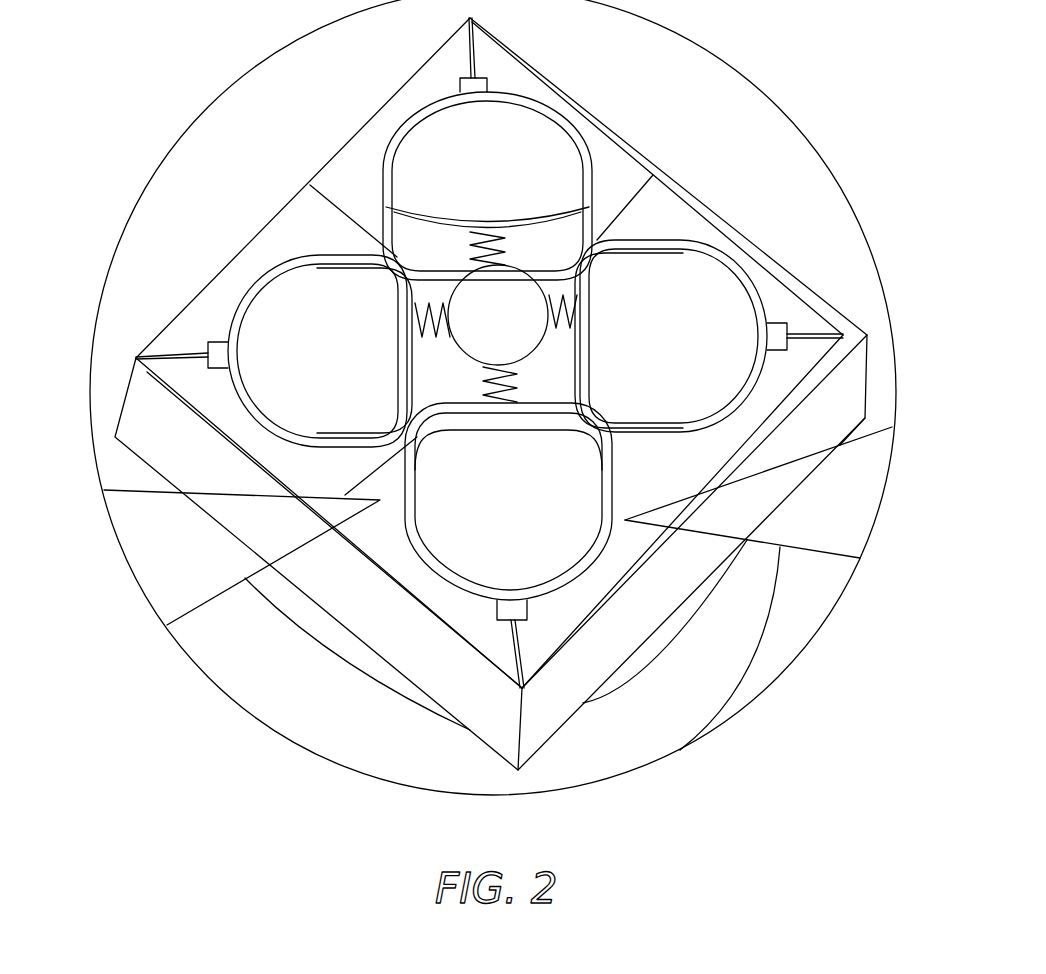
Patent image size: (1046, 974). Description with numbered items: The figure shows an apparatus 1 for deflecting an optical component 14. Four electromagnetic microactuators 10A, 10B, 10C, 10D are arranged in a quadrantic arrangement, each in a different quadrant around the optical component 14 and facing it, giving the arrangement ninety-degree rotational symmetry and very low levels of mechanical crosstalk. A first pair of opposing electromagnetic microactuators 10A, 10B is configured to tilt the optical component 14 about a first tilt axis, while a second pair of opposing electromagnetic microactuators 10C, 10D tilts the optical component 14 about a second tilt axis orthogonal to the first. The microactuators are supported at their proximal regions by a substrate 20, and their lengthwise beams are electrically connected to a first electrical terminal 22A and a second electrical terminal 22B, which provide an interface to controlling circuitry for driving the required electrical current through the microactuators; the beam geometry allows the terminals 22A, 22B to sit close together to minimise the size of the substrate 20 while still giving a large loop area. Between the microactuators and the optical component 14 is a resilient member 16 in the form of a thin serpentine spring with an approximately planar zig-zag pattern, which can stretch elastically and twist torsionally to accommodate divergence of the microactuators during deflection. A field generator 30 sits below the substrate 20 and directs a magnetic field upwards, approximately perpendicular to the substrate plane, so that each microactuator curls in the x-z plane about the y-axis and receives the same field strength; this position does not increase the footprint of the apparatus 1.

The apparatus 1 is at (80, 156).
The electromagnetic microactuator 10A is at (727, 257).
The electromagnetic microactuator 10B is at (270, 277).
The electromagnetic microactuator 10C is at (413, 117).
The electromagnetic microactuator 10D is at (423, 547).
The optical component 14 is at (513, 328).
The resilient member 16 is at (517, 370).
The substrate 20 is at (823, 370).
The first electrical terminal 22A is at (498, 640).
The second electrical terminal 22B is at (535, 638).
The field generator 30 is at (710, 612).